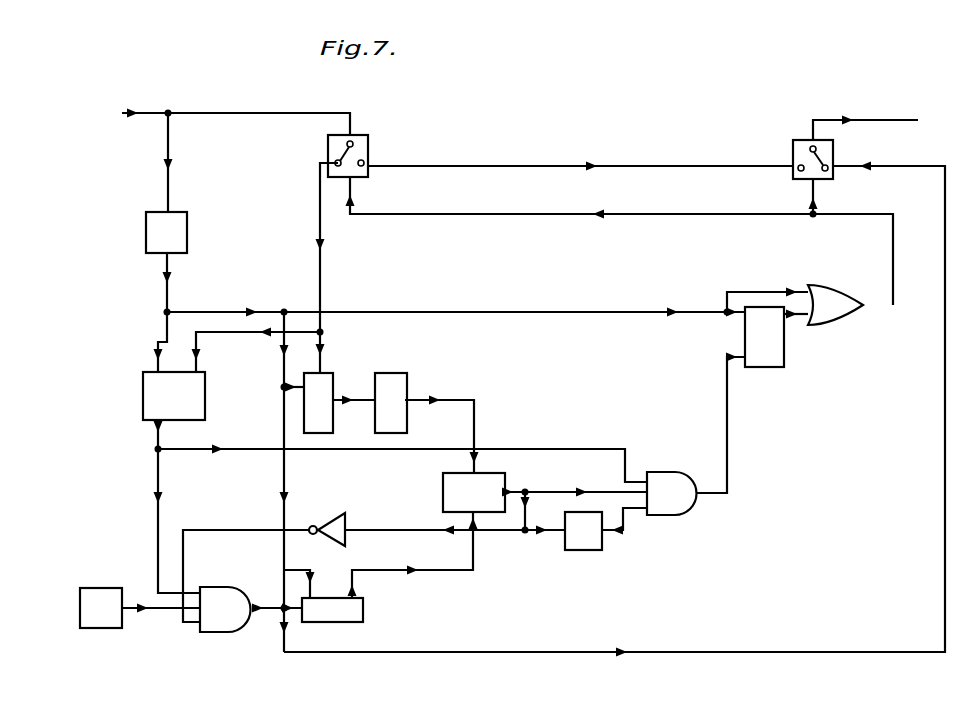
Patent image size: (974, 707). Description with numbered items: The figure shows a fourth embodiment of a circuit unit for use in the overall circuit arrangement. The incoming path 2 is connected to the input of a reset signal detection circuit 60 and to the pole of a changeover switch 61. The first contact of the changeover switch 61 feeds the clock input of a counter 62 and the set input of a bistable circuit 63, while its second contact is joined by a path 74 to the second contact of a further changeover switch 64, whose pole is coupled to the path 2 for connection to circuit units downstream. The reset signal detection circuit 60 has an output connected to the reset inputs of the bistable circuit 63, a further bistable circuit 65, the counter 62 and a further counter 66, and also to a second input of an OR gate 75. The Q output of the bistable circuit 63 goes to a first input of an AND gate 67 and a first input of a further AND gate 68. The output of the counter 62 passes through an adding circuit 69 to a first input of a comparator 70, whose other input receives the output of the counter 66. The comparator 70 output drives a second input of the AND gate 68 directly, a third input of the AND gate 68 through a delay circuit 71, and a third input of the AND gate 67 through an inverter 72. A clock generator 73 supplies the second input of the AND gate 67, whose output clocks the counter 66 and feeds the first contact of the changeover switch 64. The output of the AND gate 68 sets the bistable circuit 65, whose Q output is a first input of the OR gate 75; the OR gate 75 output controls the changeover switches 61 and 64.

The path 2 is at (188, 112).
The reset signal detection circuit 60 is at (146, 228).
The changeover switch 61 is at (370, 148).
The counter 62 is at (333, 375).
The bistable circuit 63 is at (143, 372).
The further changeover switch 64 is at (793, 153).
The further bistable circuit 65 is at (785, 350).
The further counter 66 is at (363, 609).
The AND gate 67 is at (231, 587).
The further AND gate 68 is at (672, 472).
The adding circuit 69 is at (407, 375).
The comparator 70 is at (443, 492).
The delay circuit 71 is at (602, 545).
The inverter 72 is at (347, 517).
The clock generator 73 is at (100, 588).
The path 74 is at (551, 165).
The OR gate 75 is at (841, 285).